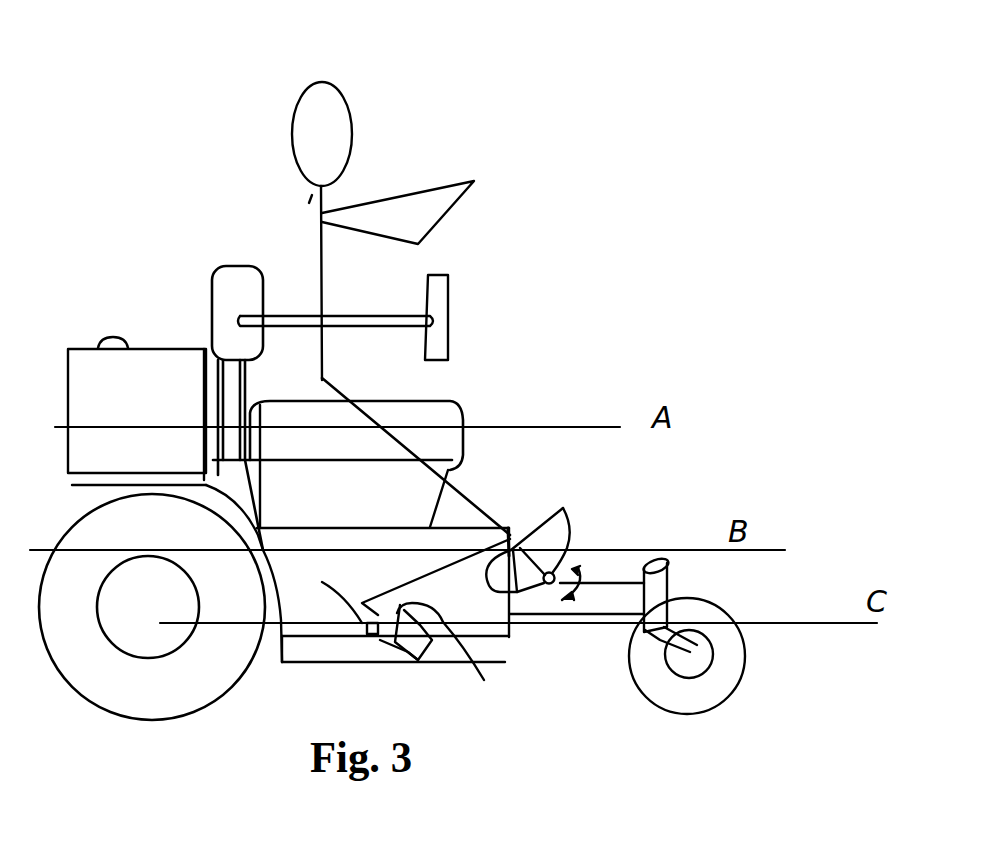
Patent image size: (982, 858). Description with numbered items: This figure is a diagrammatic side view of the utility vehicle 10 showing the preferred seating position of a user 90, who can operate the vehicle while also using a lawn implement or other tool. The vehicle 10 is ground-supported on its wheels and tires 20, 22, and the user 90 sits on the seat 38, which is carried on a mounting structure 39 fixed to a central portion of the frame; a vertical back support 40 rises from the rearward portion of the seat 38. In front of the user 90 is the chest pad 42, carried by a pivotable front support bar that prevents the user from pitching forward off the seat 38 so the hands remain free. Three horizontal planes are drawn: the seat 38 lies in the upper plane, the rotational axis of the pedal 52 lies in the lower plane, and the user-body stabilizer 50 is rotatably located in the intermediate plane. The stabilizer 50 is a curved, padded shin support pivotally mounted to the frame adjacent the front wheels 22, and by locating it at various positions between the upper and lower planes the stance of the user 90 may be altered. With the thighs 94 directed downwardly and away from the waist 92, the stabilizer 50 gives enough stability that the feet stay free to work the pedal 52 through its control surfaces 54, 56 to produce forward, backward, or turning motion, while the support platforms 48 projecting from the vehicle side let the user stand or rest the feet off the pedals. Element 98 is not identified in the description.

The utility vehicle 10 is at (638, 301).
The wheels and tires 20 is at (112, 687).
The front wheels 22 is at (667, 698).
The seat 38 is at (472, 400).
The mounting structure 39 is at (336, 502).
The vertical back support 40 is at (229, 251).
The chest pad 42 is at (460, 297).
The support platforms 48 is at (307, 643).
The user-body stabilizer 50 is at (581, 512).
The pedal 52 is at (400, 647).
The control surface 54 is at (430, 634).
The control surface 56 is at (483, 659).
The user 90 is at (388, 89).
The waist 92 is at (333, 374).
The thighs 94 is at (481, 493).
The operator lower leg 98 is at (431, 570).